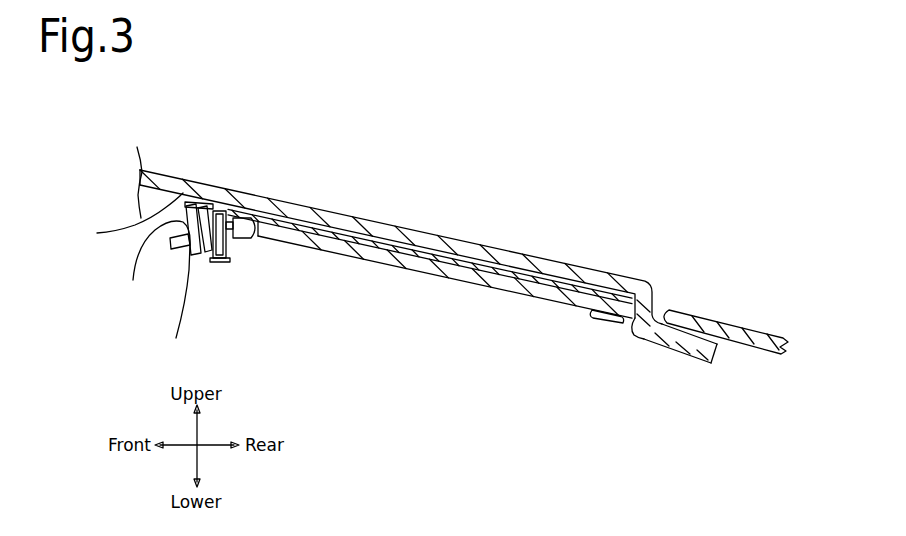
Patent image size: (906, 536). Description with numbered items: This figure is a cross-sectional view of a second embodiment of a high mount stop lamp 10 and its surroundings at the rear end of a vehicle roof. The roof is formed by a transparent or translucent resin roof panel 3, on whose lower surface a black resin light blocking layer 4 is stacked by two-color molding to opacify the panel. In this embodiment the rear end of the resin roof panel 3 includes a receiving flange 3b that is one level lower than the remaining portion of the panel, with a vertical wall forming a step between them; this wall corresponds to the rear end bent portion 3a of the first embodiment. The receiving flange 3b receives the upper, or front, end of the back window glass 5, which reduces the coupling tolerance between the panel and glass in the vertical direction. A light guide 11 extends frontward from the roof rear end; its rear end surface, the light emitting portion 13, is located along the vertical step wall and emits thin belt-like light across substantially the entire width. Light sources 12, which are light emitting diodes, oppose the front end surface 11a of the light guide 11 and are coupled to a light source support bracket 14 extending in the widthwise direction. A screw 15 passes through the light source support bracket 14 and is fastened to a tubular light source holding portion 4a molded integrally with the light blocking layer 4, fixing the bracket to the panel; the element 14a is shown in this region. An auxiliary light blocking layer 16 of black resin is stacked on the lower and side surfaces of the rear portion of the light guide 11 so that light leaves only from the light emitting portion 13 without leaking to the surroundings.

The resin roof panel 3 is at (378, 222).
The rear end bent portion 3a is at (662, 311).
The receiving flange 3b is at (716, 358).
The light blocking layer 4 is at (132, 197).
The light source holding portion 4a is at (149, 279).
The back window glass 5 is at (742, 329).
The high mount stop lamp 10 is at (206, 285).
The light guide 11 is at (418, 260).
The front end surface 11a is at (258, 240).
The light source 12 is at (253, 240).
The light emitting portion 13 is at (652, 289).
The light source support bracket 14 is at (205, 253).
The bracket foot 14a is at (180, 235).
The screw 15 is at (184, 286).
The auxiliary light blocking layer 16 is at (593, 325).